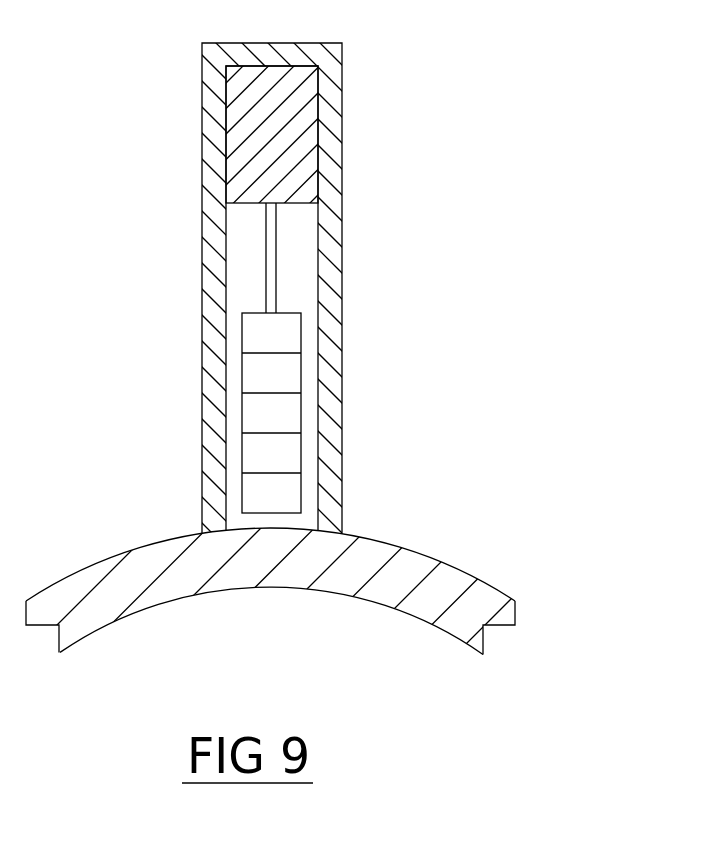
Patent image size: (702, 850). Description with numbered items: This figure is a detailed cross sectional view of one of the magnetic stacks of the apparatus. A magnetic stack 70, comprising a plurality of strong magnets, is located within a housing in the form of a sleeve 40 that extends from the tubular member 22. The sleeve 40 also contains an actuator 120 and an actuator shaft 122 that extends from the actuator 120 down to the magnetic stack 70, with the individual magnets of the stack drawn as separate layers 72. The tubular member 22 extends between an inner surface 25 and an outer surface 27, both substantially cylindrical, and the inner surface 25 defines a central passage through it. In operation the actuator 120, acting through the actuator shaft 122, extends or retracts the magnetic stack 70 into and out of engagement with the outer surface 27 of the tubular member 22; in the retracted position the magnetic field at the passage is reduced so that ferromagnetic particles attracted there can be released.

The sleeve 40 is at (343, 205).
The actuator 120 is at (237, 135).
The actuator shaft 122 is at (265, 250).
The magnetic stack 70 is at (298, 413).
The stack layers 72 is at (300, 370).
The tubular member 22 is at (503, 612).
The outer surface 27 is at (452, 567).
The inner surface 25 is at (442, 625).